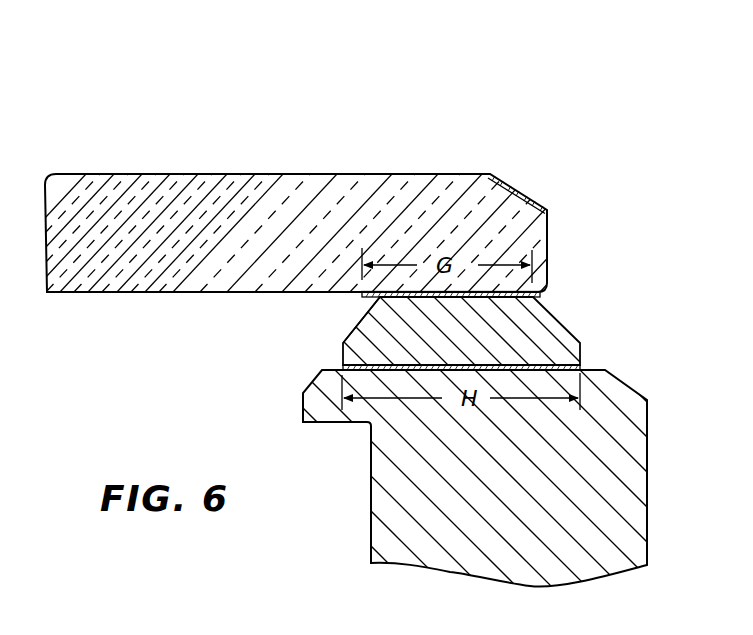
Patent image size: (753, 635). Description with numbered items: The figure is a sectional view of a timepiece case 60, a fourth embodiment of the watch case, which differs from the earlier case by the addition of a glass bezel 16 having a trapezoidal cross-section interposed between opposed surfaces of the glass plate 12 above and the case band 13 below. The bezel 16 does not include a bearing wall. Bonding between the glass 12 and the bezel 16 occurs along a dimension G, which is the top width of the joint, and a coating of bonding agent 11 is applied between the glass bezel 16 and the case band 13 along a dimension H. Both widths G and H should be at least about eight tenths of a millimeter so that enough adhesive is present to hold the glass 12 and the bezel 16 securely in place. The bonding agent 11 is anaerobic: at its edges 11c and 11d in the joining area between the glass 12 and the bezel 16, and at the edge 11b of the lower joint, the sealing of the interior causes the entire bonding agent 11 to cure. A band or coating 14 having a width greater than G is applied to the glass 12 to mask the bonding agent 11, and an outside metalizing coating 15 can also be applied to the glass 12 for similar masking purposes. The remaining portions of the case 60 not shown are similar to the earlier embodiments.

The glass 12 is at (122, 195).
The outside metalizing coating 15 is at (507, 186).
The band or coating 14 is at (363, 295).
The bonding agent 11 is at (503, 299).
The edge of bonding agent 11c is at (540, 296).
The edge of bonding agent 11d is at (377, 302).
The edge of bonding agent 11b is at (343, 366).
The glass bezel 16 is at (557, 350).
The case band 13 is at (385, 532).
The timepiece case 60 is at (654, 308).